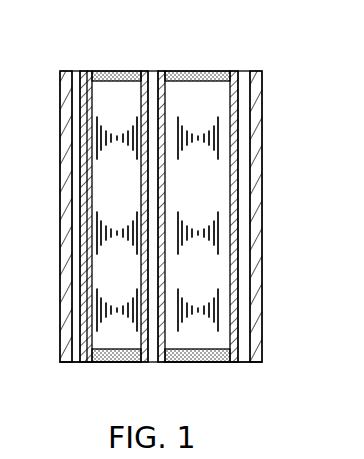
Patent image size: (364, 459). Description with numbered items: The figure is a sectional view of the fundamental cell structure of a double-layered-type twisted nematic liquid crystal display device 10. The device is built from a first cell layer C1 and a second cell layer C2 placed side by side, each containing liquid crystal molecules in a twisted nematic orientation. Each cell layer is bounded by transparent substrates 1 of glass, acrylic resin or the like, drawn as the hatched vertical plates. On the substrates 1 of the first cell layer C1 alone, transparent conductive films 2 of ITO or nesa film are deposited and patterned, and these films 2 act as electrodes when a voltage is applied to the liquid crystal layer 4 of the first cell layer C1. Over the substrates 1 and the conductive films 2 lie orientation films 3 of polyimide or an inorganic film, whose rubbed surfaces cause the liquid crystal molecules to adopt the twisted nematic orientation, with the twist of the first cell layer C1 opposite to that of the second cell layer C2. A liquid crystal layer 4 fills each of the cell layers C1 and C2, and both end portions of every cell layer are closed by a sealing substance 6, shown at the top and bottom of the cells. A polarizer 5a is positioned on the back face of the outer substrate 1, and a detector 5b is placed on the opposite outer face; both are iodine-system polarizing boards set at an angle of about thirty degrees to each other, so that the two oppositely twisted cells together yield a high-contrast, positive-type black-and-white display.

The display device 10 is at (258, 53).
The transparent substrate 1 is at (81, 76).
The transparent conductive film 2 is at (156, 168).
The orientation film 3 is at (141, 103).
The liquid crystal layer 4 is at (116, 344).
The polarizer 5a is at (66, 363).
The detector 5b is at (256, 363).
The sealing substance 6 is at (141, 363).
The first cell layer C1 is at (59, 120).
The second cell layer C2 is at (252, 90).